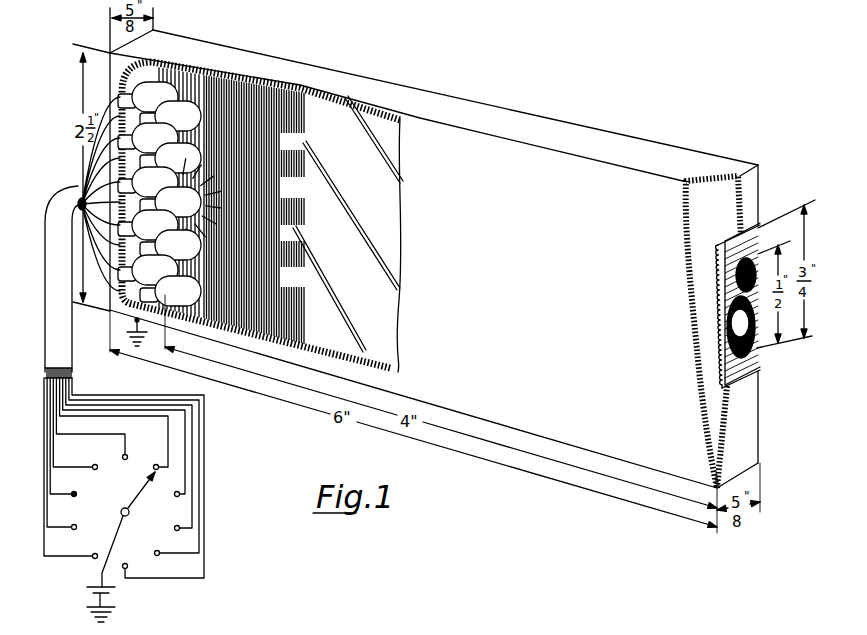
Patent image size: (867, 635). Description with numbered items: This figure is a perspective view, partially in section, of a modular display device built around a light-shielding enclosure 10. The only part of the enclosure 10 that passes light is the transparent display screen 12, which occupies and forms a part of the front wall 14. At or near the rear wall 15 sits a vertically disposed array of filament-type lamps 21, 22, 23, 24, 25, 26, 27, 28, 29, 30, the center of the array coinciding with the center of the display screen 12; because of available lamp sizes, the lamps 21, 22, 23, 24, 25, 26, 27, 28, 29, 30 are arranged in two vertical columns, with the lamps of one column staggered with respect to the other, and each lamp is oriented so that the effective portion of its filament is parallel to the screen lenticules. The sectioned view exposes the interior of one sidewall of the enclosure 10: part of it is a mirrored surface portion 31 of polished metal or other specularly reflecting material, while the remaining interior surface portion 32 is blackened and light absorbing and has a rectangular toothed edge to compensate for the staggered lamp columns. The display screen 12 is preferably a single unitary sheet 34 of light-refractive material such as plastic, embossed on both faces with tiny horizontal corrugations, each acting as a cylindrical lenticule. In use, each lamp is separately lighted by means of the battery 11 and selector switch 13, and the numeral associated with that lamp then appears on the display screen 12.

The enclosure 10 is at (537, 118).
The battery 11 is at (113, 593).
The display screen 12 is at (748, 370).
The selector switch 13 is at (138, 498).
The front wall 14 is at (748, 447).
The rear wall 15 is at (112, 262).
The filament-type lamp 21 is at (178, 92).
The filament-type lamp 22 is at (170, 116).
The filament-type lamp 23 is at (148, 138).
The filament-type lamp 24 is at (170, 158).
The filament-type lamp 25 is at (148, 182).
The filament-type lamp 26 is at (181, 202).
The filament-type lamp 27 is at (148, 225).
The filament-type lamp 28 is at (170, 245).
The filament-type lamp 29 is at (148, 270).
The filament-type lamp 30 is at (170, 291).
The mirrored surface portion 31 is at (377, 117).
The light-absorbing surface portion 32 is at (300, 84).
The unitary sheet 34 is at (720, 274).